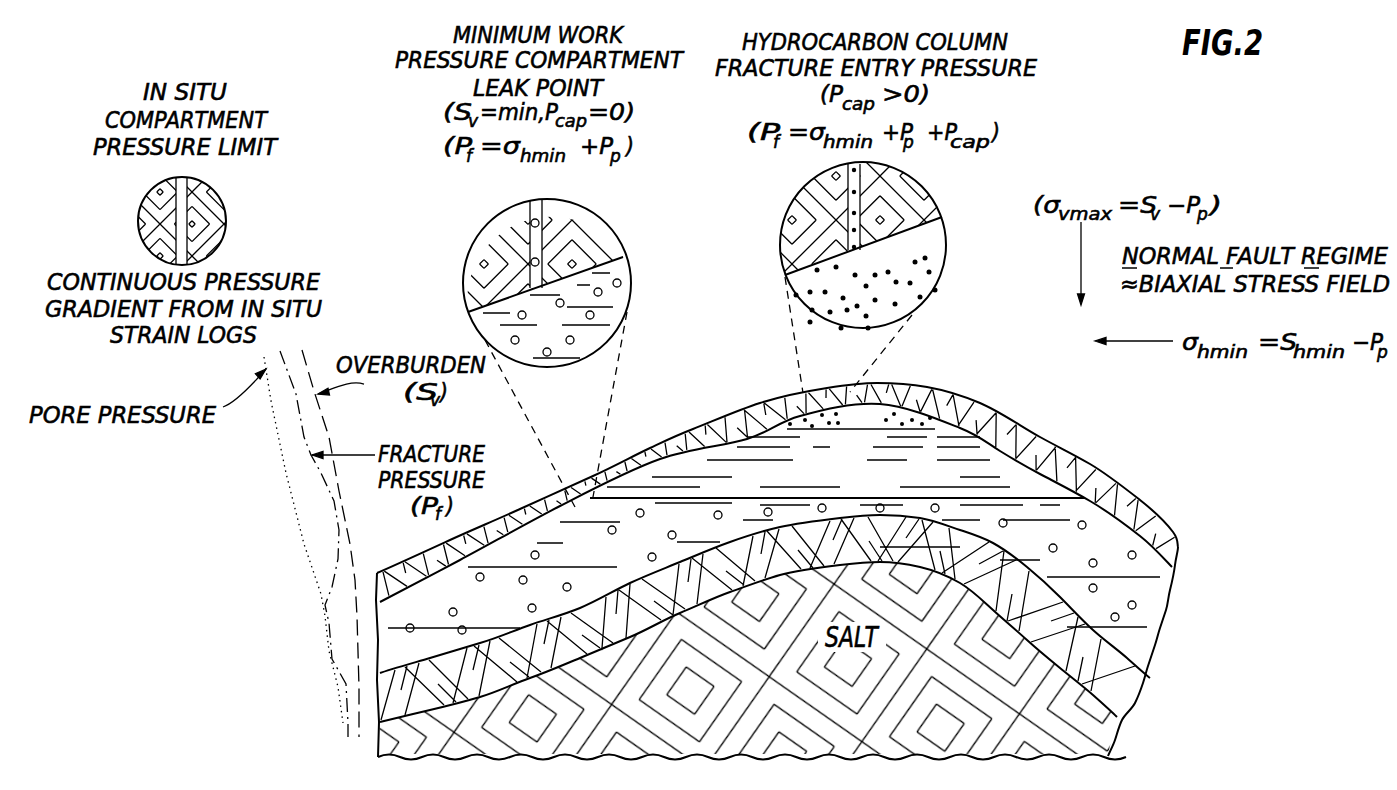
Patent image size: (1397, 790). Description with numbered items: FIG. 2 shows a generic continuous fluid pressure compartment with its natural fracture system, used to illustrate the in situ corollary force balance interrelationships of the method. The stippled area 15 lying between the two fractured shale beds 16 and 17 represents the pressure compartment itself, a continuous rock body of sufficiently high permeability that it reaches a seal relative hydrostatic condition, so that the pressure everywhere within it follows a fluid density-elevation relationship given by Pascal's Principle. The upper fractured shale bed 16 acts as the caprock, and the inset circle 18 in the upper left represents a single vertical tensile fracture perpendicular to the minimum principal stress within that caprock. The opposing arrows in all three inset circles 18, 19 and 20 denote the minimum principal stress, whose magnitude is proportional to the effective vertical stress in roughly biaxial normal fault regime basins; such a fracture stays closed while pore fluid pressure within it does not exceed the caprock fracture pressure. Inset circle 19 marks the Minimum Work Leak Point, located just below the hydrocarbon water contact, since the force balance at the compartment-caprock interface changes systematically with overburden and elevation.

The stippled area 15 is at (1167, 620).
The fractured shale bed 16 is at (1180, 558).
The fractured shale bed 17 is at (1138, 707).
The inset circle 18 is at (232, 217).
The inset circle 19 is at (625, 240).
The inset circle 20 is at (933, 187).